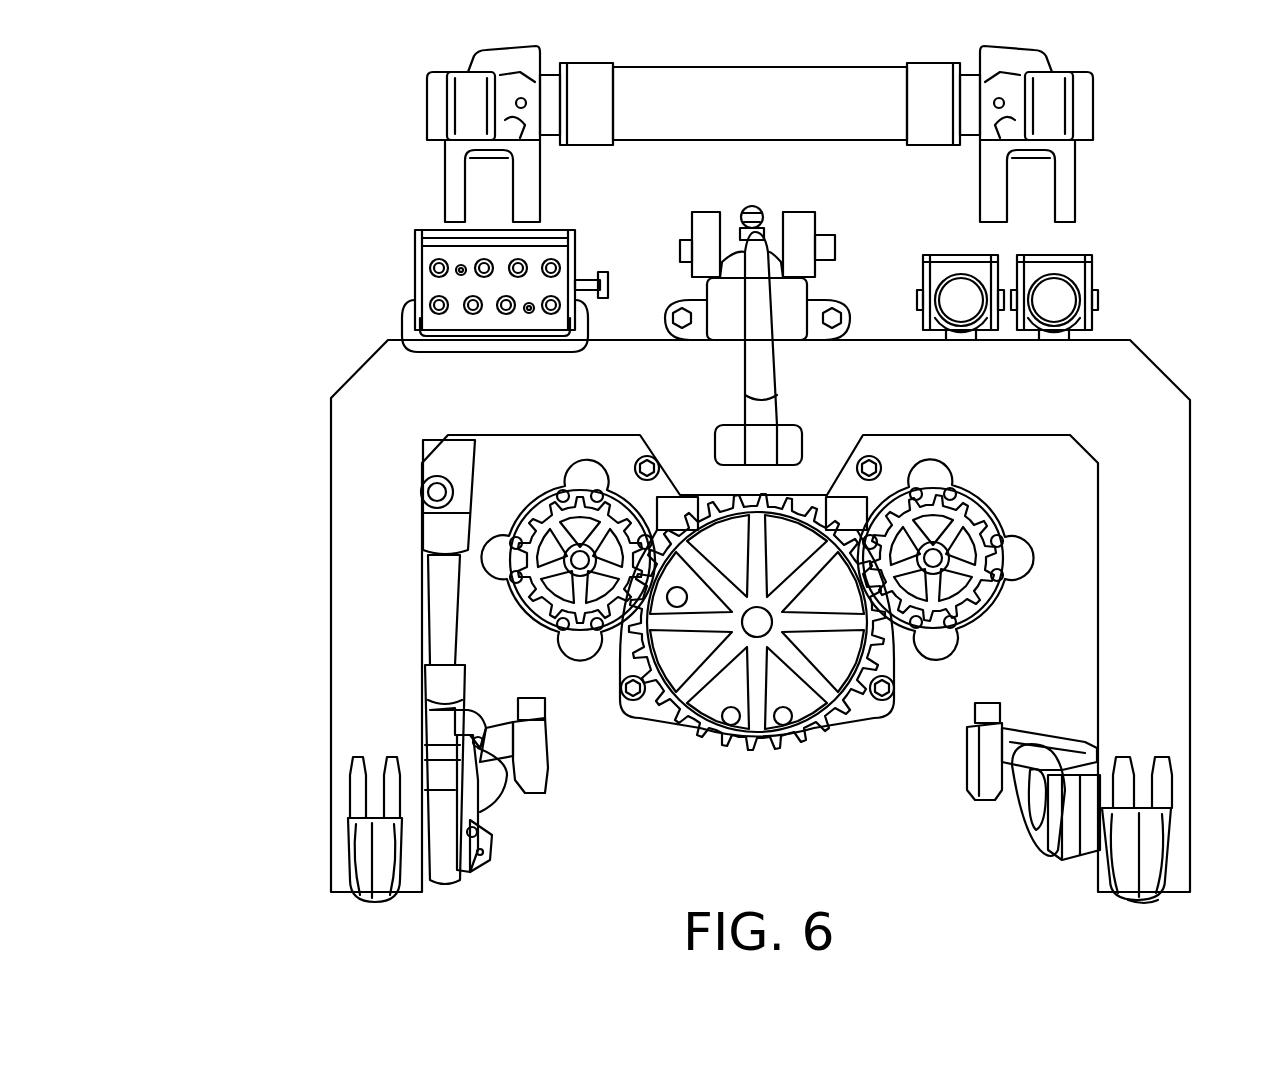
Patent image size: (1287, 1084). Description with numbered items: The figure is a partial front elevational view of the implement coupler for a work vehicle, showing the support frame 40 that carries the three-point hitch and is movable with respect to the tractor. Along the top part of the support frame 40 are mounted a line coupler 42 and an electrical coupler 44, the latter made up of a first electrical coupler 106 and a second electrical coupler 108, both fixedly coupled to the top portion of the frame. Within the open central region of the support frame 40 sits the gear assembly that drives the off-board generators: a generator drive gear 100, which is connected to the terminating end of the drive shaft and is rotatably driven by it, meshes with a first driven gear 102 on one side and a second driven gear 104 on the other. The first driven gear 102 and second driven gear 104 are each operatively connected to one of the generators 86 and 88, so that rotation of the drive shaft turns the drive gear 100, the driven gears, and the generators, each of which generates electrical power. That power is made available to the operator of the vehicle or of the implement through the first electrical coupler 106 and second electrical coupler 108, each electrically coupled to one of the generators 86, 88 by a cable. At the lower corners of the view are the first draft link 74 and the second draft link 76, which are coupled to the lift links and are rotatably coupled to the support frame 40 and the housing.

The support frame 40 is at (268, 615).
The line coupler 42 is at (372, 267).
The electrical coupler 44 is at (1083, 275).
The first draft link 74 is at (1040, 785).
The second draft link 76 is at (495, 785).
The generator 86 is at (548, 614).
The generator 88 is at (990, 600).
The generator drive gear 100 is at (744, 745).
The first driven gear 102 is at (548, 512).
The second driven gear 104 is at (975, 523).
The first electrical coupler 106 is at (963, 290).
The second electrical coupler 108 is at (1070, 297).